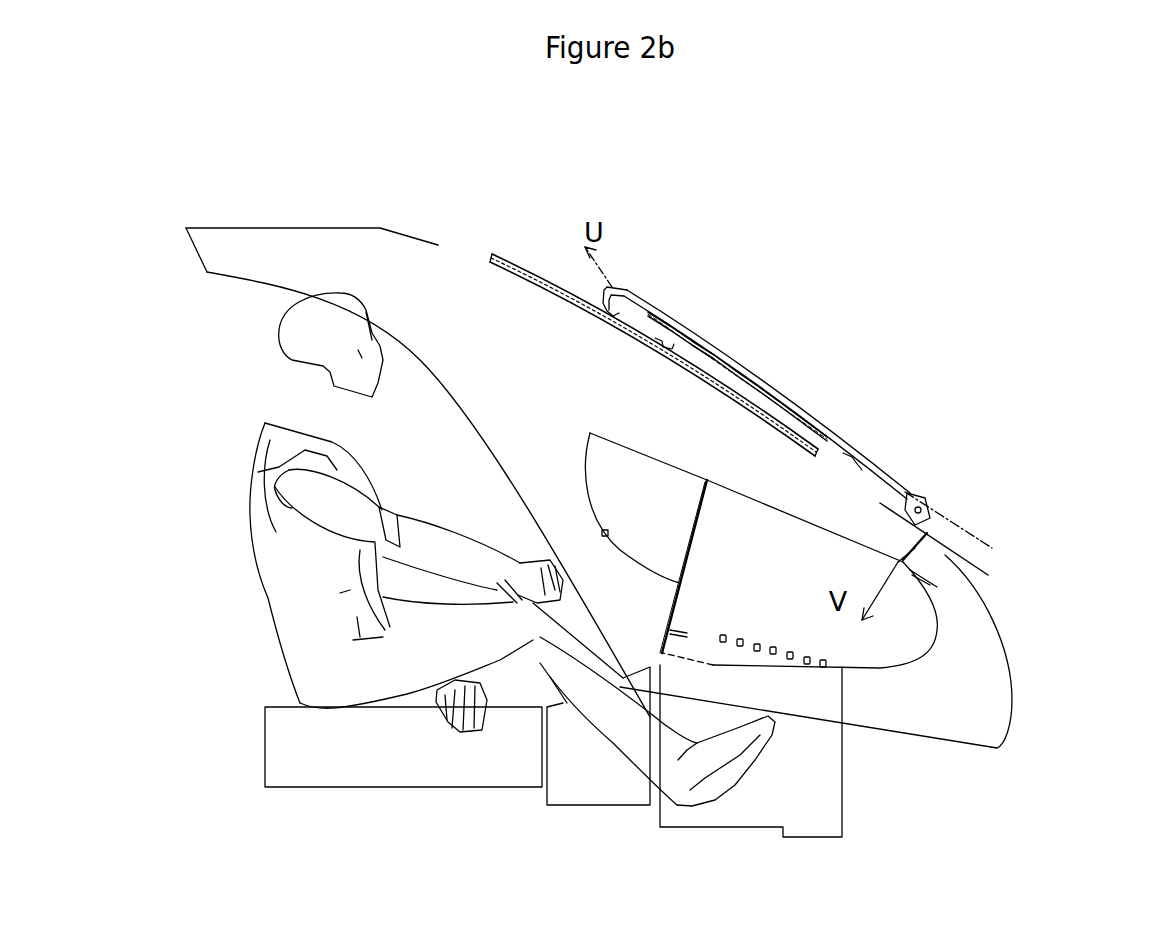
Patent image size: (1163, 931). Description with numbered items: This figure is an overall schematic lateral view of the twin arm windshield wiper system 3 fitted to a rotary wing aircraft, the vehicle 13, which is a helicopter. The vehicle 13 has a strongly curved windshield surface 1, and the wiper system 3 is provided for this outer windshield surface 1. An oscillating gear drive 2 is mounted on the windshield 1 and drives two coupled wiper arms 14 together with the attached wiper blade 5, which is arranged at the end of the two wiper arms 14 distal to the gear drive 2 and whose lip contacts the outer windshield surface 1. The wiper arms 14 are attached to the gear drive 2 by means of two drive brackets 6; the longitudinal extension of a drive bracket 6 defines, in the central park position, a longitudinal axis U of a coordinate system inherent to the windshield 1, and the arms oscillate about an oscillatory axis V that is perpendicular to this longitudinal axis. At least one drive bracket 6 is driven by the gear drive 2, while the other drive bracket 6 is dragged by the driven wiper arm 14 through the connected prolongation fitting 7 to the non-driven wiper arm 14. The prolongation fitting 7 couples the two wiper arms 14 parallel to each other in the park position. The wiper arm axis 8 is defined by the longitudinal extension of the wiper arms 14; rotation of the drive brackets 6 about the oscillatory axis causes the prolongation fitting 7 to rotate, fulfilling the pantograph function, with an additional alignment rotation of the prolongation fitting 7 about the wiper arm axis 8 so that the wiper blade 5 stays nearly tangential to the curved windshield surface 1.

The windshield surface 1 is at (433, 220).
The oscillating gear drive 2 is at (937, 582).
The windshield wiper system 3 is at (868, 265).
The wiper blade 5 is at (518, 267).
The drive bracket 6 is at (928, 522).
The prolongation fitting 7 is at (603, 280).
The wiper arm axis 8 is at (985, 537).
The vehicle 13 is at (251, 396).
The wiper arms 14 is at (805, 410).